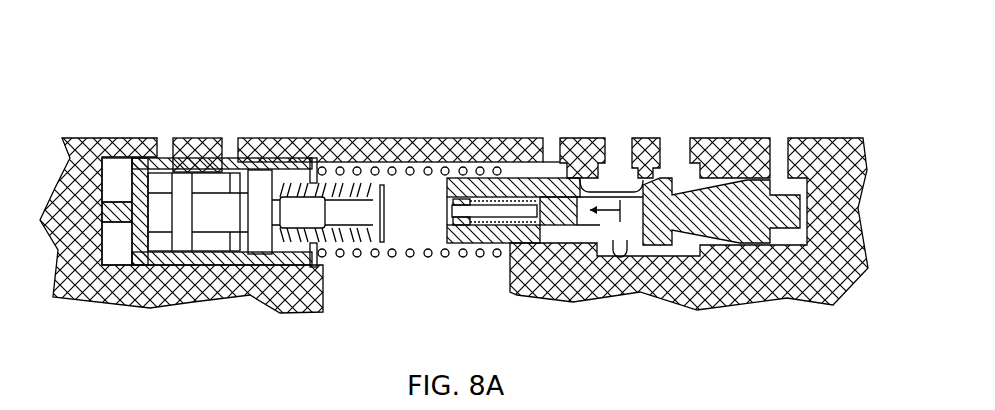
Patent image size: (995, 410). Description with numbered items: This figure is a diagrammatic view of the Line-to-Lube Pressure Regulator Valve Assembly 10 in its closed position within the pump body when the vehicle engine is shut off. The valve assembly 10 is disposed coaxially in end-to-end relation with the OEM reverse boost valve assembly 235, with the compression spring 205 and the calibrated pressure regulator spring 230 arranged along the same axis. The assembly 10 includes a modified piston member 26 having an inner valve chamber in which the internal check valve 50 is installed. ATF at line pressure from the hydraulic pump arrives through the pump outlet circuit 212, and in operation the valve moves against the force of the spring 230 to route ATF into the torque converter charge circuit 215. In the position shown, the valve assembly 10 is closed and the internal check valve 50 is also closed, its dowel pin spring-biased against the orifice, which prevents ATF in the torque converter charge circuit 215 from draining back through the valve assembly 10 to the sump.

The Line-to-Lube Pressure Regulator Valve Assembly 10 is at (453, 73).
The modified piston member 26 is at (672, 190).
The internal check valve 50 is at (543, 228).
The compression spring 205 is at (352, 256).
The pump outlet circuit 212 is at (625, 189).
The torque converter charge circuit 215 is at (553, 176).
The pressure regulator spring 230 is at (428, 258).
The reverse boost valve assembly 235 is at (126, 183).